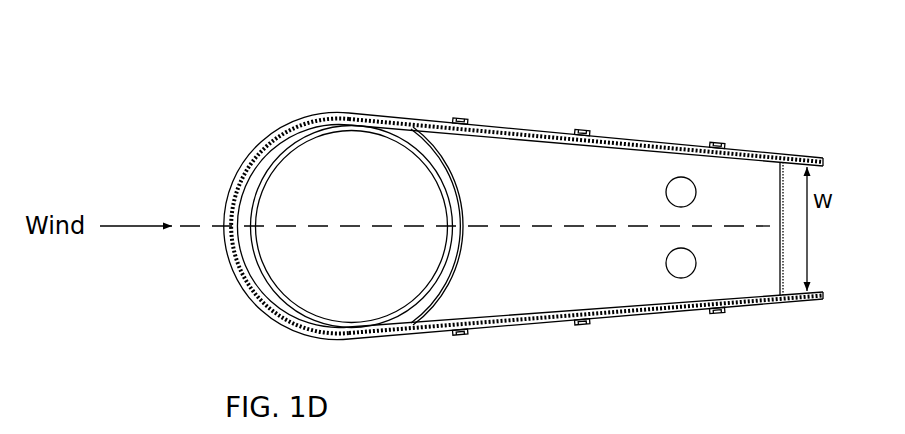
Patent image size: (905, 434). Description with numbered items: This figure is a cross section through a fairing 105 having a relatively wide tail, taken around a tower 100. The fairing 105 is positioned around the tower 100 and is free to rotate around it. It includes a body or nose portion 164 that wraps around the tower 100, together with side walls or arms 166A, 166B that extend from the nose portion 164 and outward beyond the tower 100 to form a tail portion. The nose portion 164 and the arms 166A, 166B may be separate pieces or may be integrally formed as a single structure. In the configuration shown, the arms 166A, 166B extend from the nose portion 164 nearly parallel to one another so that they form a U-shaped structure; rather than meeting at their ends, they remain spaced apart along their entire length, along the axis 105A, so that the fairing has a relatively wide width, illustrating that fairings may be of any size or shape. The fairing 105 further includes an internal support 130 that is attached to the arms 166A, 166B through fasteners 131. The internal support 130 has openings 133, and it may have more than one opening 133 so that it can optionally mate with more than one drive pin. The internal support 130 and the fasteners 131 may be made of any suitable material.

The tower 100 is at (277, 148).
The fairing 105 is at (237, 279).
The axis 105A is at (522, 223).
The internal support 130 is at (745, 278).
The fasteners 131 is at (703, 137).
The openings 133 is at (702, 197).
The nose portion 164 is at (233, 190).
The arm 166A is at (735, 148).
The arm 166B is at (747, 308).